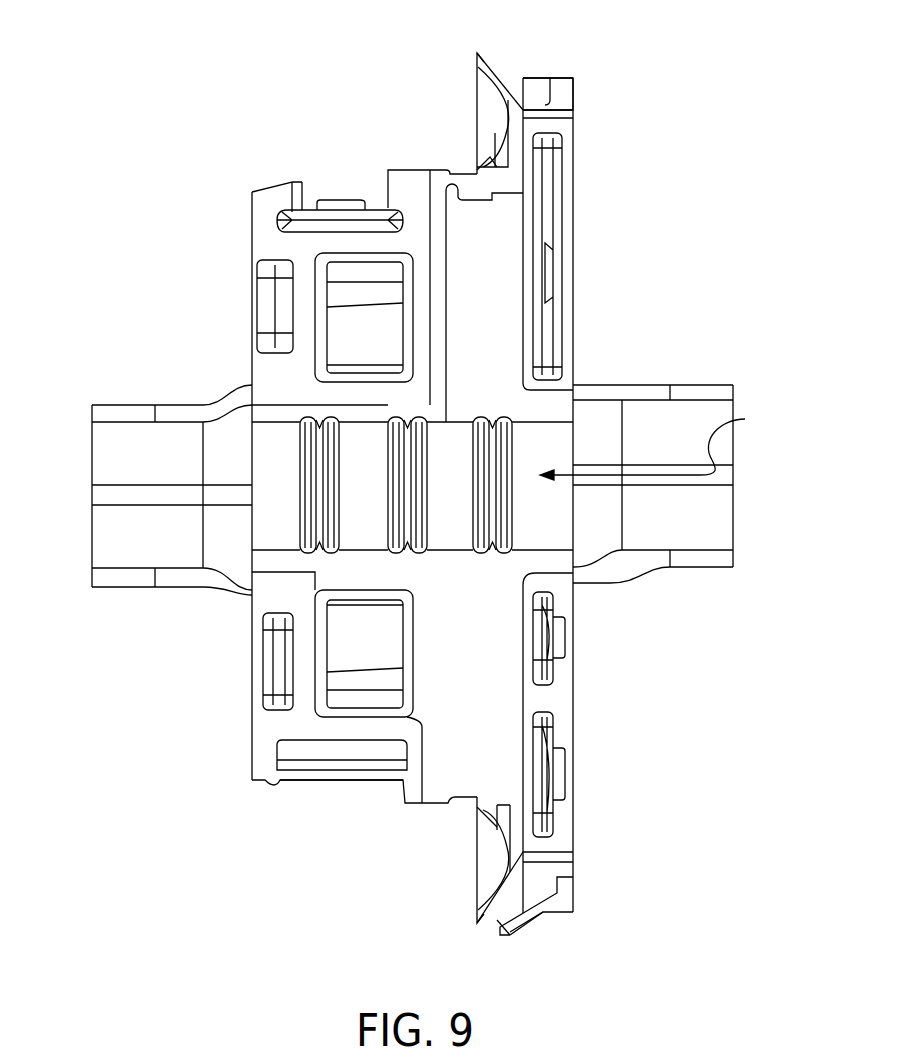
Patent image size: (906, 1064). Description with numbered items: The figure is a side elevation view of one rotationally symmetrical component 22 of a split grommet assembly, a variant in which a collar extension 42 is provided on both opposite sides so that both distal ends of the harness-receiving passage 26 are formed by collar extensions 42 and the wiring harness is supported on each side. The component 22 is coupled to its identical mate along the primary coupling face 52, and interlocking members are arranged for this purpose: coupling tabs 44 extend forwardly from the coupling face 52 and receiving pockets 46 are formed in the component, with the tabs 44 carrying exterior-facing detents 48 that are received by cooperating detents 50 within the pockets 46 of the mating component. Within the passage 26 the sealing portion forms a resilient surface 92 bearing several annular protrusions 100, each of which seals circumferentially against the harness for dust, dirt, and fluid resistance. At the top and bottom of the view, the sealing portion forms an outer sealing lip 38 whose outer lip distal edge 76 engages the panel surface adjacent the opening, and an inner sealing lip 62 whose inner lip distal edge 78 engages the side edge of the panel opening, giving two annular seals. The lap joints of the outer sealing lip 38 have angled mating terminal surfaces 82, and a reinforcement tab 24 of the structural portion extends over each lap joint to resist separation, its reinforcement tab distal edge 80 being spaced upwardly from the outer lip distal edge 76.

The rotationally symmetrical component 22 is at (285, 89).
The reinforcement tab 24 is at (508, 935).
The harness-receiving passage 26 is at (654, 444).
The outer sealing lip 38 is at (499, 64).
The collar extension 42 is at (118, 412).
The coupling tab 44 is at (297, 182).
The receiving pocket 46 is at (548, 203).
The detent 48 is at (340, 200).
The detent 50 is at (303, 773).
The primary coupling face 52 is at (273, 560).
The inner sealing lip 62 is at (491, 157).
The outer lip distal edge 76 is at (477, 57).
The inner lip distal edge 78 is at (503, 135).
The reinforcement tab distal edge 80 is at (497, 932).
The mating terminal surface 82 is at (510, 80).
The resilient surface 92 is at (562, 527).
The annular protrusion 100 is at (320, 424).